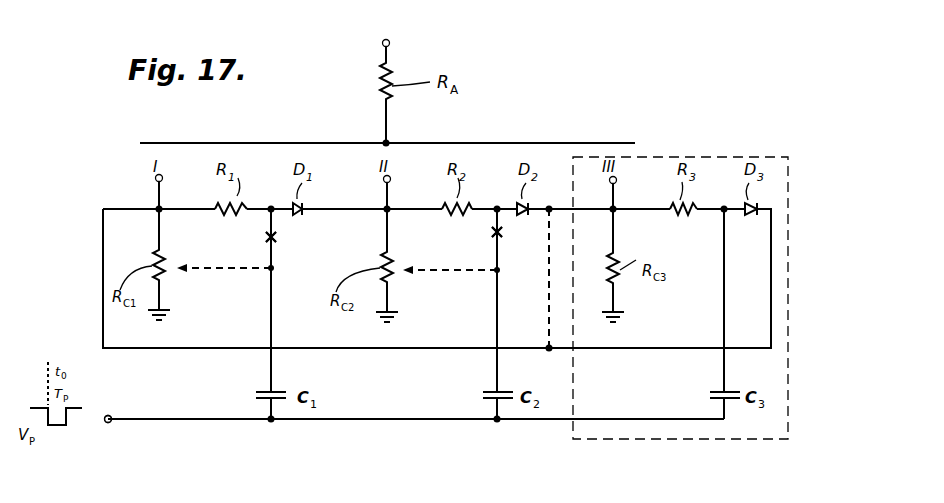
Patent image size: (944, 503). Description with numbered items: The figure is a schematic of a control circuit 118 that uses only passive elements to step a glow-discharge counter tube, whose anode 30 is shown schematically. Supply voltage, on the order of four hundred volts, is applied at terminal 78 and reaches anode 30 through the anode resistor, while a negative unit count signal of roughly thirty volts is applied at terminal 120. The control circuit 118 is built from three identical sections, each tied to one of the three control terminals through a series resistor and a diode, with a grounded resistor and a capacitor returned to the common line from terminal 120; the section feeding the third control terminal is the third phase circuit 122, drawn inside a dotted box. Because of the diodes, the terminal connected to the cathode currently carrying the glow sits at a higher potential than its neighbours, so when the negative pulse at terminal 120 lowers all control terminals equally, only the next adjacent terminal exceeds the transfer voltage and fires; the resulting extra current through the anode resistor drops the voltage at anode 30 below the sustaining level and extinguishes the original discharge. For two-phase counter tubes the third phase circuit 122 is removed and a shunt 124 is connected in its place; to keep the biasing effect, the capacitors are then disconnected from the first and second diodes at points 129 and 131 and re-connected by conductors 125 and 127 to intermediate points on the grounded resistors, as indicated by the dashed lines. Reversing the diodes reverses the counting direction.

The supply voltage terminal 78 is at (389, 41).
The anode 30 is at (531, 143).
The third phase circuit 122 is at (693, 157).
The disconnection point 129 is at (280, 237).
The disconnection point 131 is at (505, 232).
The conductor 125 is at (213, 272).
The conductor 127 is at (430, 273).
The shunt 124 is at (549, 330).
The unit count signal terminal 120 is at (107, 423).
The control circuit 118 is at (289, 429).